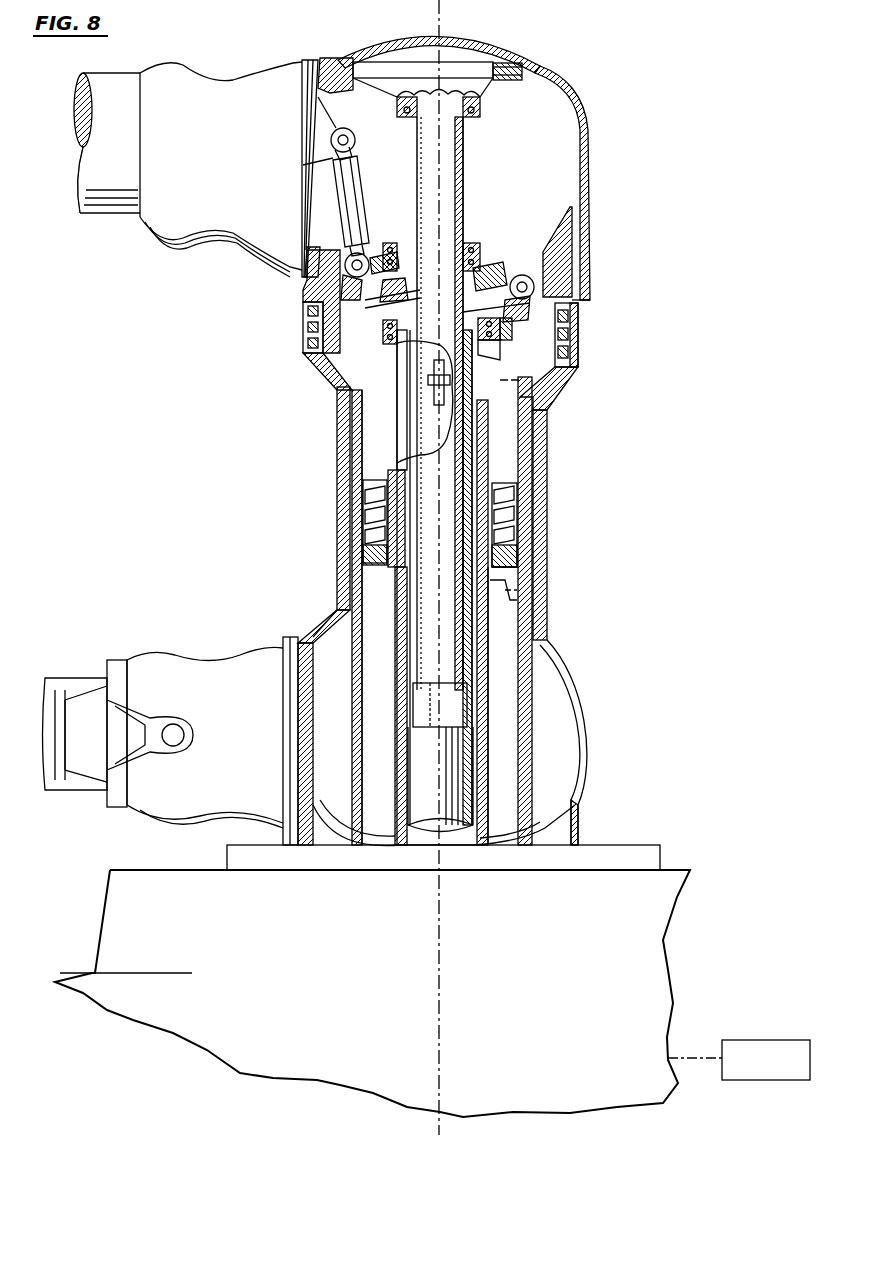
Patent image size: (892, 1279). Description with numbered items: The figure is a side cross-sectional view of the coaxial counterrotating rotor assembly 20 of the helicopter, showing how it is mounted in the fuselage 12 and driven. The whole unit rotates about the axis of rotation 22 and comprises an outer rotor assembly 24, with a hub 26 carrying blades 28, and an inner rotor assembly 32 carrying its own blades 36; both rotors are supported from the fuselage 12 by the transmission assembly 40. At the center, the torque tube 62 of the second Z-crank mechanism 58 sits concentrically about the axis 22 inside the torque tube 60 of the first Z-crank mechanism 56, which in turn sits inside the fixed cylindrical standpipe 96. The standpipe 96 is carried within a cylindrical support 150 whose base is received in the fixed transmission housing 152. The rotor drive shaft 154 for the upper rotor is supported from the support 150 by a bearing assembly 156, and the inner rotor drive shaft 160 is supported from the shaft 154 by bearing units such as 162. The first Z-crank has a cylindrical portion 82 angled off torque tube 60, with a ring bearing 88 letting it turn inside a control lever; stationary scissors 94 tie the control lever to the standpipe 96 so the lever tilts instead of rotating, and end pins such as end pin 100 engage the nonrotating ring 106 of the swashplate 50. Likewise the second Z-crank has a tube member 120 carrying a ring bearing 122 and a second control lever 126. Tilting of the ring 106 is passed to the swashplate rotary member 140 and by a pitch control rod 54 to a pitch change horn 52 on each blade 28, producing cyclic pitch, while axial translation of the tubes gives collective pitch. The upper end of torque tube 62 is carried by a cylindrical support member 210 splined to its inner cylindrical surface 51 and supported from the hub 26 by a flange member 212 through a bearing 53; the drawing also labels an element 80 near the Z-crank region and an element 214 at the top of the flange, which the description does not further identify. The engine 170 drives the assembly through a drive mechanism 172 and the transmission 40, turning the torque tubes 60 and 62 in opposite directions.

The fuselage 12 is at (78, 975).
The rotor assembly 20 is at (620, 126).
The axis of rotation 22 is at (441, 24).
The outer rotor assembly 24 is at (218, 75).
The hub 26 is at (570, 92).
The blades 28 is at (84, 148).
The inner rotor assembly 32 is at (240, 660).
The blades 36 is at (72, 680).
The transmission assembly 40 is at (542, 970).
The swashplate 50 is at (490, 334).
The inner cylindrical surface 51 is at (452, 258).
The pitch control change horns 52 is at (326, 126).
The bearing 53 is at (406, 117).
The pitch control rod 54 is at (345, 220).
The first Z-crank mechanism 56 is at (345, 357).
The second Z-crank mechanism 58 is at (490, 248).
The torque tube 60 is at (438, 773).
The torque tube 62 is at (444, 709).
The gear assembly 80 is at (503, 226).
The cylindrical portion 82 is at (408, 252).
The ring bearing 88 is at (397, 243).
The stationary scissors 94 is at (433, 365).
The standpipe 96 is at (410, 394).
The end pin 100 is at (503, 265).
The nonrotating ring 106 is at (505, 328).
The tube member 120 is at (475, 318).
The ring bearing 122 is at (392, 312).
The second control lever 126 is at (383, 331).
The swashplate rotary member 140 is at (528, 322).
The cylindrical support 150 is at (475, 600).
The transmission housing 152 is at (648, 847).
The rotor drive shaft 154 is at (520, 555).
The bearing assembly 156 is at (518, 523).
The inner rotor drive shaft 160 is at (565, 675).
The bearing unit 162 is at (303, 320).
The engine 170 is at (795, 1040).
The drive mechanism 172 is at (700, 1058).
The cylindrical support member 210 is at (430, 218).
The flange member 212 is at (486, 86).
The nut 214 is at (522, 70).